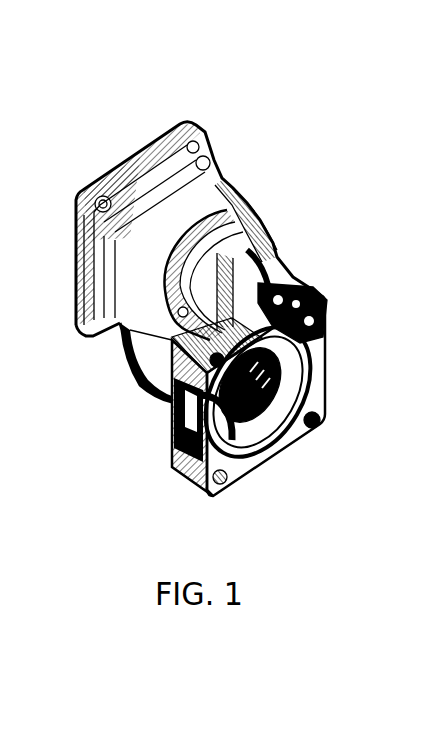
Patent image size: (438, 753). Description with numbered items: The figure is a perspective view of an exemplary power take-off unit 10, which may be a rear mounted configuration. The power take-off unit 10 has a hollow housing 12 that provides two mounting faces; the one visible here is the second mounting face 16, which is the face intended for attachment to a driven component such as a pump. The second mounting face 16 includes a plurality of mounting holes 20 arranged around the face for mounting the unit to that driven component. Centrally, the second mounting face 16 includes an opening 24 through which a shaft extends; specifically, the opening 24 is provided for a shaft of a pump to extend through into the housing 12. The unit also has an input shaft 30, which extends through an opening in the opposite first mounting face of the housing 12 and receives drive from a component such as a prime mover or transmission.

The power take-off unit 10 is at (372, 143).
The hollow housing 12 is at (137, 287).
The second mounting face 16 is at (312, 338).
The mounting holes 20 is at (318, 422).
The opening 24 is at (263, 430).
The input shaft 30 is at (322, 463).